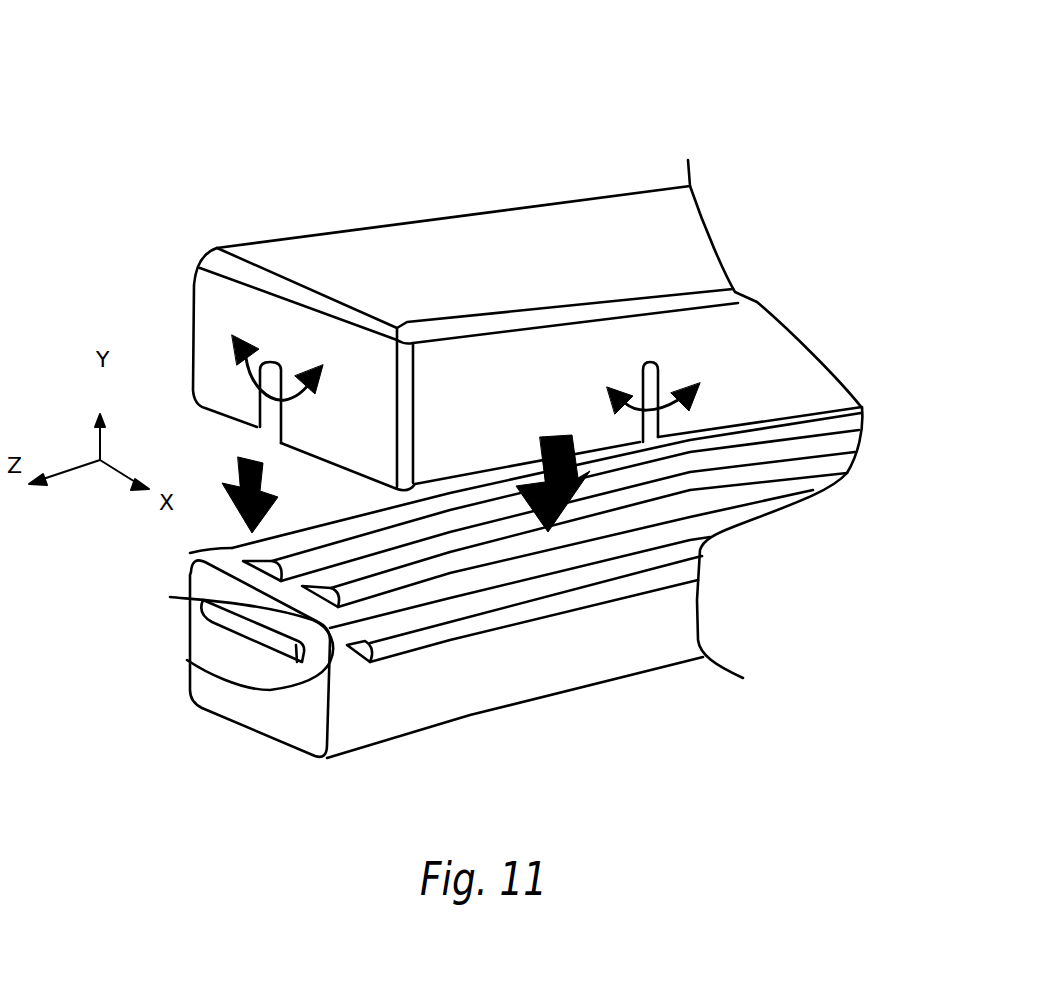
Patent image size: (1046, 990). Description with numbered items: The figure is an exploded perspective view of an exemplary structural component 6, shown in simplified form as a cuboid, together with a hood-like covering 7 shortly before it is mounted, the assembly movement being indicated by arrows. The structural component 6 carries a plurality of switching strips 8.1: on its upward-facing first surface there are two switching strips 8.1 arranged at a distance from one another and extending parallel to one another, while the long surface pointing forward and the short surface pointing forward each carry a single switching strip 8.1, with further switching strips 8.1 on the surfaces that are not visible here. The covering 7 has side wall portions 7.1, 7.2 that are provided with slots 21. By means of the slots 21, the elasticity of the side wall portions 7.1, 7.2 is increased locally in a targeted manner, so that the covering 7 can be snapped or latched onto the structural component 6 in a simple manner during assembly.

The covering 7 is at (552, 234).
The side wall portion 7.1 is at (806, 297).
The side wall portion 7.2 is at (797, 388).
The slot 21 is at (268, 363).
The switching strip 8.1 is at (200, 553).
The structural component 6 is at (462, 597).